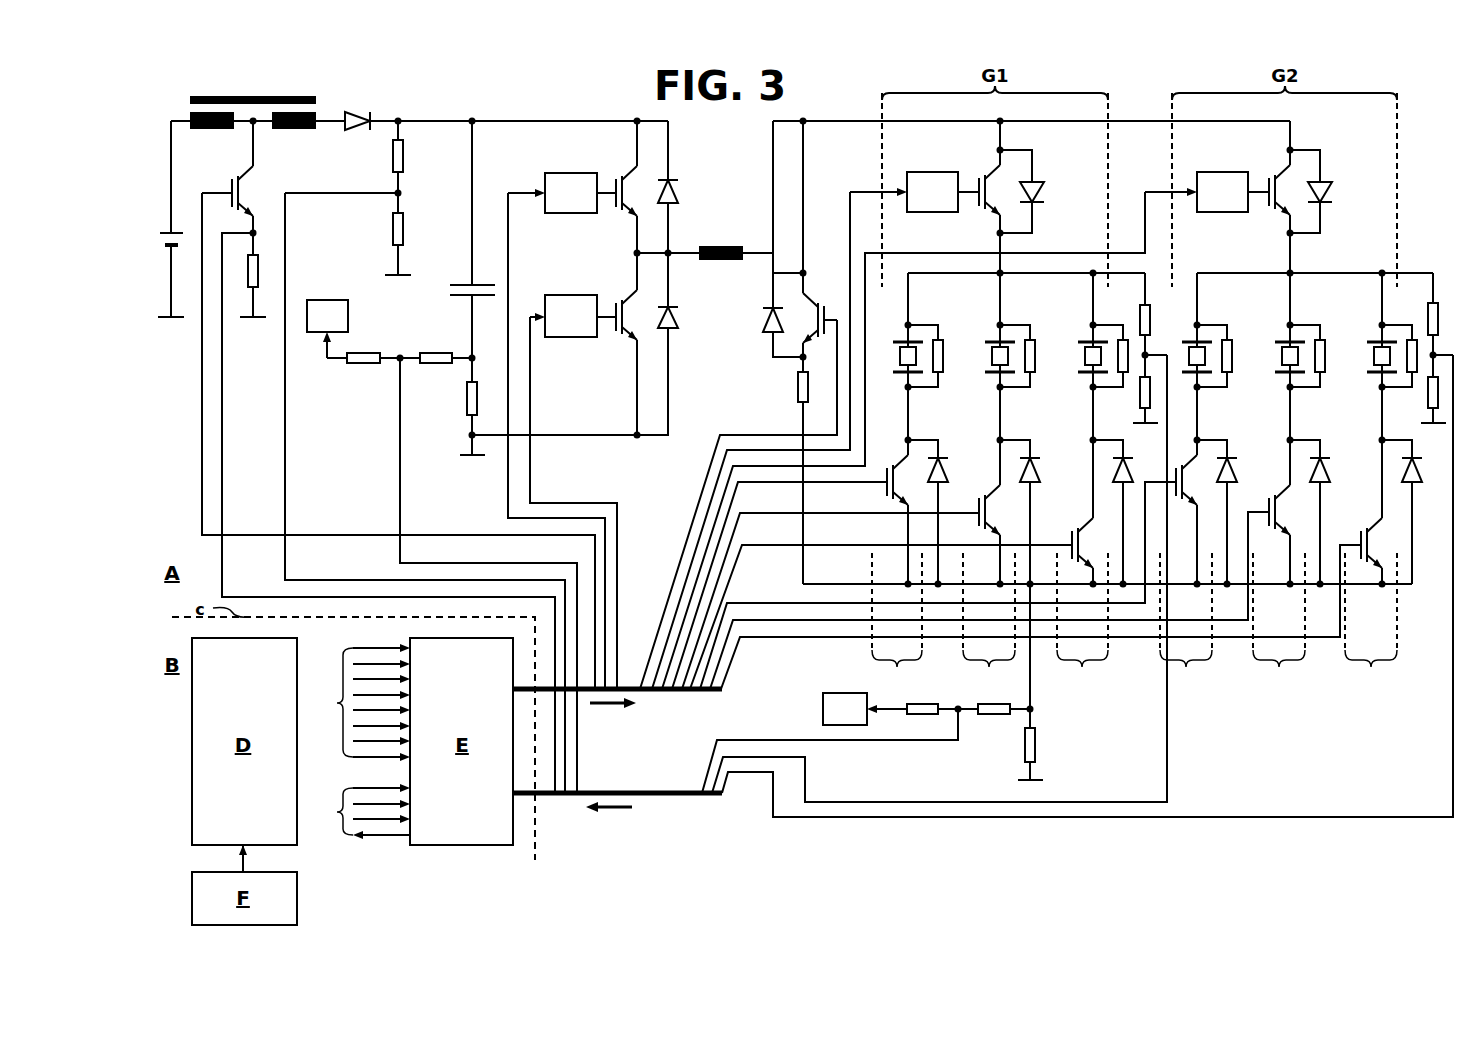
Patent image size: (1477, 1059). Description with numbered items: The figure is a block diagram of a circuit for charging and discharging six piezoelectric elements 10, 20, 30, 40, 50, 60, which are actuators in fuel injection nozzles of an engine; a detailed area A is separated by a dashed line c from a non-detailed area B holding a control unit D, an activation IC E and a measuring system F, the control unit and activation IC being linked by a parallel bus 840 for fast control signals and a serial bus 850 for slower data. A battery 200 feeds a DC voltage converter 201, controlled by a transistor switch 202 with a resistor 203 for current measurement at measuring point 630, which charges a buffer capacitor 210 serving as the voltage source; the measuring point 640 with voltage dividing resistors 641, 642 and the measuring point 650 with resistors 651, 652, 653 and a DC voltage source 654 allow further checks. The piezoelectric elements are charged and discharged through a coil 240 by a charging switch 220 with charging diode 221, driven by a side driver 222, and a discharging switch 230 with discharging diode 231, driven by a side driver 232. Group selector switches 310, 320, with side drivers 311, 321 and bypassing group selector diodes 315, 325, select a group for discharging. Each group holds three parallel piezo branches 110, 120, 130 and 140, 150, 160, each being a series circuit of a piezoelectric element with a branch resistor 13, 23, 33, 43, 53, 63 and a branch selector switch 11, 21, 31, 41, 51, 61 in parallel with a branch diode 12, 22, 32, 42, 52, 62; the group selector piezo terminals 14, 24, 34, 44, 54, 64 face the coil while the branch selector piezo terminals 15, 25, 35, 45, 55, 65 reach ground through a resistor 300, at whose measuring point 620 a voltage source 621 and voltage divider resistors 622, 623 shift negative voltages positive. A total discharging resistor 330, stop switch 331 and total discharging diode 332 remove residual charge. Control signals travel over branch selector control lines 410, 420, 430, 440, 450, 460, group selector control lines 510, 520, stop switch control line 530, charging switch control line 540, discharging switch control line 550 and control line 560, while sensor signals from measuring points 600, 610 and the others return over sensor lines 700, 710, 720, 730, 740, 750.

The piezoelectric element 10 is at (898, 352).
The branch selector switch 11 is at (886, 482).
The branch diode 12 is at (943, 470).
The branch resistor 13 is at (944, 358).
The group selector piezo terminal 14 is at (916, 334).
The branch selector piezo terminal 15 is at (903, 387).
The piezoelectric element 20 is at (990, 352).
The branch selector switch 21 is at (979, 512).
The branch diode 22 is at (1035, 470).
The branch resistor 23 is at (1036, 358).
The group selector piezo terminal 24 is at (1008, 334).
The branch selector piezo terminal 25 is at (995, 387).
The piezoelectric element 30 is at (1083, 352).
The branch selector switch 31 is at (1072, 543).
The branch diode 32 is at (1130, 470).
The branch resistor 33 is at (1127, 381).
The group selector piezo terminal 34 is at (1101, 334).
The branch selector piezo terminal 35 is at (1089, 387).
The piezoelectric element 40 is at (1187, 352).
The branch selector switch 41 is at (1177, 492).
The branch diode 42 is at (1232, 470).
The branch resistor 43 is at (1238, 358).
The group selector piezo terminal 44 is at (1205, 334).
The branch selector piezo terminal 45 is at (1194, 387).
The piezoelectric element 50 is at (1280, 352).
The branch selector switch 51 is at (1269, 512).
The branch diode 52 is at (1325, 470).
The branch resistor 53 is at (1330, 358).
The group selector piezo terminal 54 is at (1298, 334).
The branch selector piezo terminal 55 is at (1285, 387).
The piezoelectric element 60 is at (1372, 352).
The branch selector switch 61 is at (1361, 543).
The branch diode 62 is at (1420, 478).
The branch resistor 63 is at (1415, 381).
The group selector piezo terminal 64 is at (1392, 334).
The branch selector piezo terminal 65 is at (1378, 387).
The piezo branch 110 is at (897, 620).
The piezo branch 120 is at (989, 620).
The piezo branch 130 is at (1082, 620).
The piezo branch 140 is at (1186, 620).
The piezo branch 150 is at (1279, 620).
The piezo branch 160 is at (1371, 620).
The battery 200 is at (181, 222).
The DC voltage converter 201 is at (248, 96).
The transistor switch 202 is at (256, 190).
The resistor 203 is at (262, 270).
The buffer capacitor 210 is at (448, 292).
The charging switch 220 is at (626, 178).
The charging diode 221 is at (678, 196).
The side driver 222 is at (568, 173).
The discharging switch 230 is at (626, 300).
The discharging diode 231 is at (678, 320).
The side driver 232 is at (568, 295).
The coil 240 is at (720, 247).
The resistor 300 is at (1040, 745).
The group selector switch 310 is at (985, 178).
The side driver 311 is at (932, 172).
The group selector diode 315 is at (1046, 193).
The group selector switch 320 is at (1275, 178).
The side driver 321 is at (1222, 172).
The group selector diode 325 is at (1334, 193).
The total discharging resistor 330 is at (798, 387).
The stop switch 331 is at (821, 302).
The total discharging diode 332 is at (765, 324).
The branch selector control line 410 is at (692, 537).
The branch selector control line 420 is at (689, 565).
The branch selector control line 430 is at (686, 593).
The branch selector control line 440 is at (757, 608).
The branch selector control line 450 is at (801, 625).
The branch selector control line 460 is at (846, 642).
The group selector control line 510 is at (704, 484).
The group selector control line 520 is at (698, 510).
The stop switch control line 530 is at (704, 455).
The charging switch control line 540 is at (506, 490).
The discharging switch control line 550 is at (532, 468).
The control line 560 is at (201, 525).
The measuring point 600 is at (1137, 304).
The measuring point 610 is at (1436, 303).
The measuring point 620 is at (958, 707).
The voltage source 621 is at (843, 727).
The voltage divider resistor 622 is at (920, 718).
The voltage divider resistor 623 is at (993, 718).
The measuring point 630 is at (260, 233).
The measuring point 640 is at (403, 197).
The voltage dividing resistor 641 is at (405, 163).
The voltage dividing resistor 642 is at (405, 240).
The measuring point 650 is at (400, 356).
The resistor 651 is at (465, 402).
The resistor 652 is at (366, 368).
The resistor 653 is at (438, 368).
The DC voltage source 654 is at (324, 300).
The sensor line 700 is at (1168, 775).
The sensor line 710 is at (1453, 774).
The sensor line 720 is at (700, 773).
The sensor line 730 is at (565, 725).
The sensor line 740 is at (573, 750).
The sensor line 750 is at (577, 773).
The parallel bus 840 is at (354, 702).
The serial bus 850 is at (354, 811).